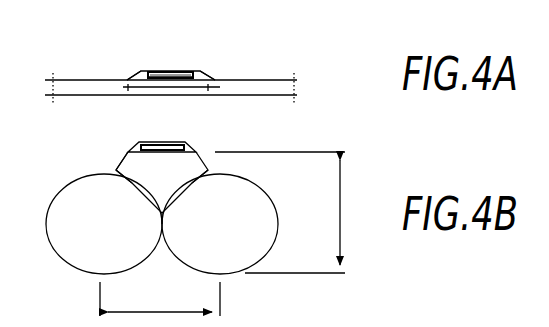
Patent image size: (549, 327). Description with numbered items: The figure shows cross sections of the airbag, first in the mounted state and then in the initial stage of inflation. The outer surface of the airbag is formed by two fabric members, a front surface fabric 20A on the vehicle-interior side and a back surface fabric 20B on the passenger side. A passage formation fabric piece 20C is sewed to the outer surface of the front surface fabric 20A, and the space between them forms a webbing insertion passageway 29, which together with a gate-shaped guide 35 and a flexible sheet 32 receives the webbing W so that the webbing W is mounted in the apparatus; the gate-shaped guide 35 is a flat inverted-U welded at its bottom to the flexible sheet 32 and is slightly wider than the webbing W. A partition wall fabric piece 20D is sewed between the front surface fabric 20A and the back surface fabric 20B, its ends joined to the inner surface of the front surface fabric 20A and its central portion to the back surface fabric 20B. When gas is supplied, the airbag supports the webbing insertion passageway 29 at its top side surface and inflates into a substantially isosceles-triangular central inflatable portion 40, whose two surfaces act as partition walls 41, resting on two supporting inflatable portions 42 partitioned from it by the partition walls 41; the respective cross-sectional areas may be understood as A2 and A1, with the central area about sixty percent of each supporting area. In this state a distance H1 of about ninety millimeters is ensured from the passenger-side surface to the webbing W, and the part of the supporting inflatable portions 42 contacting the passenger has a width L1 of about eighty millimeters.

In FIG. 4A, the front surface fabric 20A is at (255, 80).
In FIG. 4A, the back surface fabric 20B is at (255, 95).
In FIG. 4A, the passage formation fabric piece 20C is at (141, 71).
In FIG. 4A, the partition wall fabric piece 20D is at (158, 88).
In FIG. 4A, the webbing insertion passageway 29 is at (127, 78).
In FIG. 4B, the webbing insertion passageway 29 is at (193, 143).
In FIG. 4A, the flexible sheet 32 is at (215, 79).
In FIG. 4A, the gate-shaped guide 35 is at (160, 72).
In FIG. 4A, the webbing W is at (185, 72).
In FIG. 4B, the central inflatable portion 40 is at (142, 173).
In FIG. 4B, the partition wall 41 is at (208, 170).
In FIG. 4B, the supporting inflatable portion 42 is at (83, 253).
In FIG. 4B, the first area A1 is at (162, 224).
In FIG. 4B, the second area A2 is at (162, 188).
In FIG. 4B, the distance from passenger-side surface to webbing H1 is at (293, 212).
In FIG. 4B, the width of passenger-contacting part of inflatable portions L1 is at (160, 299).